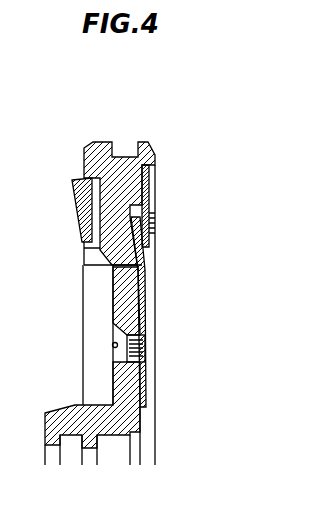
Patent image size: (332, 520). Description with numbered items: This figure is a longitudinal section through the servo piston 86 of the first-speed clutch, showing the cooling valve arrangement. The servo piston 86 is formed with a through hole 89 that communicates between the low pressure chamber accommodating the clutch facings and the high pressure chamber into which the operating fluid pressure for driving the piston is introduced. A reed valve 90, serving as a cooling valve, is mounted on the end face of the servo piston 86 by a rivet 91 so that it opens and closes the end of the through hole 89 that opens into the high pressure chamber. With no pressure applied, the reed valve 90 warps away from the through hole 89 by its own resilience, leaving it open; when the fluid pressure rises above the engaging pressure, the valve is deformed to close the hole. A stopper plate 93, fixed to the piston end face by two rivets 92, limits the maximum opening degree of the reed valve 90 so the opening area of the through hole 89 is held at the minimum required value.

The servo piston 86 is at (155, 160).
The through hole 89 is at (112, 278).
The reed valve 90 is at (145, 290).
The rivet 91 is at (140, 350).
The rivets 92 is at (155, 202).
The stopper plate 93 is at (155, 242).